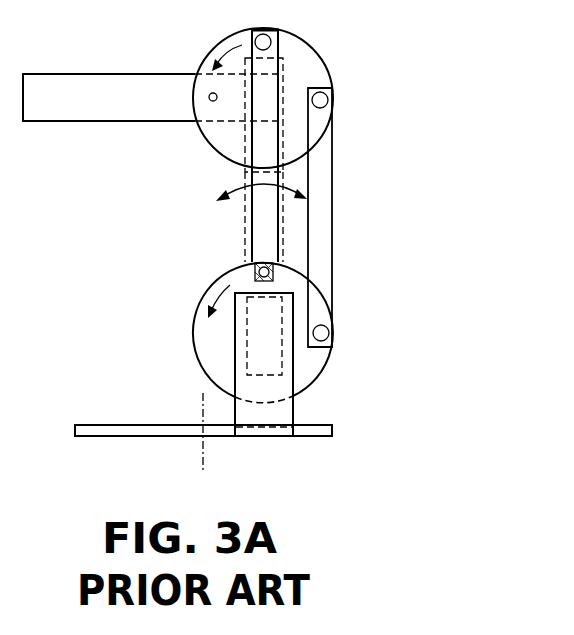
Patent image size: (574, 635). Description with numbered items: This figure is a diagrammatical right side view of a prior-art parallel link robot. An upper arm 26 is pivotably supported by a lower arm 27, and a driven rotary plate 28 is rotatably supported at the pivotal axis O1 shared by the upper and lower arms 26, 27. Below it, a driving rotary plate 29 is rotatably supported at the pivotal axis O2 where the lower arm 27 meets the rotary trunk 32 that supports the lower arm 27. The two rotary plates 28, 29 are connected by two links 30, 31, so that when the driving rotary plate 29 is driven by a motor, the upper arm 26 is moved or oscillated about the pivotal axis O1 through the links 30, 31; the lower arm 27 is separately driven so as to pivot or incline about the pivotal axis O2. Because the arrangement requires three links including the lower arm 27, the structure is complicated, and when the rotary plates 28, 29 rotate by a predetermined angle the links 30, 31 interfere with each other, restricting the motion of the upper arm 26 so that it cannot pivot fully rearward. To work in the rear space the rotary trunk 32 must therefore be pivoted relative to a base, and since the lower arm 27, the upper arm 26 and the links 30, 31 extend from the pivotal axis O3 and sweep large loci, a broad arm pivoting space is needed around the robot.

The upper arm 26 is at (87, 82).
The lower arm 27 is at (278, 217).
The driven rotary plate 28 is at (299, 34).
The driving rotary plate 29 is at (200, 303).
The link 30 is at (243, 218).
The link 31 is at (323, 257).
The rotary trunk 32 is at (233, 342).
The pivotal axis O1 is at (263, 97).
The pivotal axis O2 is at (262, 336).
The pivotal axis O3 is at (199, 448).